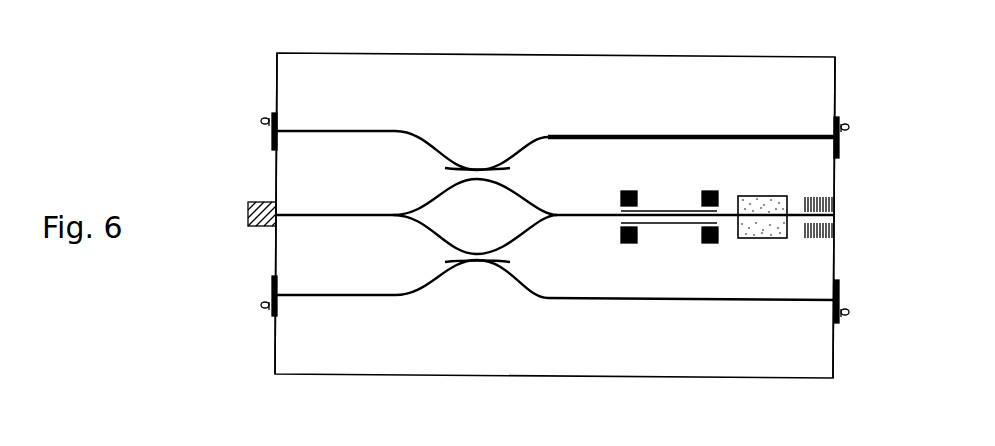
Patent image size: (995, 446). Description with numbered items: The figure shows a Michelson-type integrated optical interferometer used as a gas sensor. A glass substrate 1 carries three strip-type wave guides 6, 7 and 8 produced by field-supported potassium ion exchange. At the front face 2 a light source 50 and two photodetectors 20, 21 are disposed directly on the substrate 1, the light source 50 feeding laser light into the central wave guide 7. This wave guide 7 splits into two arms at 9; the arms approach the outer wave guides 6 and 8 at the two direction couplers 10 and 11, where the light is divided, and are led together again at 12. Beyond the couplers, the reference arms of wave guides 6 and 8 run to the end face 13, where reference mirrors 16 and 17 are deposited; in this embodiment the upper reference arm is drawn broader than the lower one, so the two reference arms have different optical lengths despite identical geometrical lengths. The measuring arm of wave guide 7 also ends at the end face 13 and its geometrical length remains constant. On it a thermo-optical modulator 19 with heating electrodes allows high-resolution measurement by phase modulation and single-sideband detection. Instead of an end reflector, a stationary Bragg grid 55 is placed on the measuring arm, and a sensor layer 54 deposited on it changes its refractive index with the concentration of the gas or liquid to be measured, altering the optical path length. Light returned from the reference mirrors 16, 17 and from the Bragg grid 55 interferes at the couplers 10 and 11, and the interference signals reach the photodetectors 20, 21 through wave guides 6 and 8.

The glass substrate 1 is at (749, 80).
The front face 2 is at (277, 80).
The end face 13 is at (838, 81).
The wave guide 6 is at (345, 131).
The wave guide 7 is at (326, 208).
The wave guide 8 is at (377, 271).
The split 9 is at (388, 221).
The direction coupler 10 is at (478, 168).
The direction coupler 11 is at (475, 265).
The junction 12 is at (567, 211).
The reference mirror 16 is at (840, 142).
The reference mirror 17 is at (840, 290).
The thermo-optical modulator 19 is at (622, 243).
The photodetector 20 is at (267, 136).
The photodetector 21 is at (268, 283).
The light source 50 is at (248, 216).
The sensor layer 54 is at (757, 240).
The Bragg grid 55 is at (834, 207).